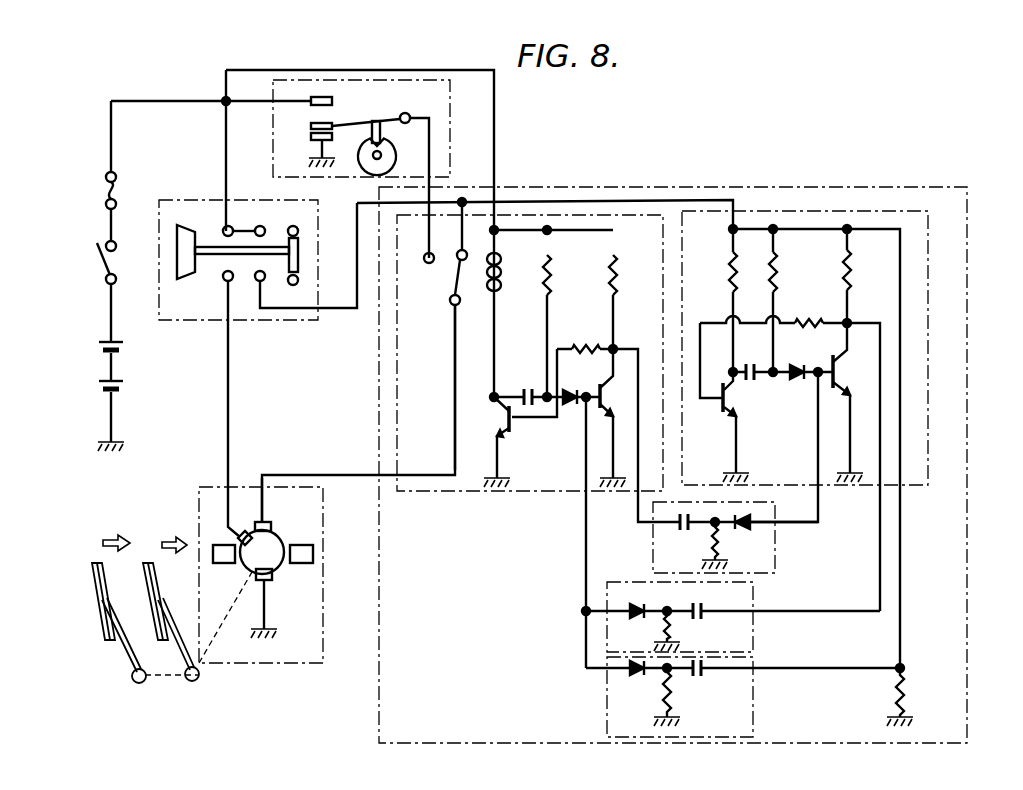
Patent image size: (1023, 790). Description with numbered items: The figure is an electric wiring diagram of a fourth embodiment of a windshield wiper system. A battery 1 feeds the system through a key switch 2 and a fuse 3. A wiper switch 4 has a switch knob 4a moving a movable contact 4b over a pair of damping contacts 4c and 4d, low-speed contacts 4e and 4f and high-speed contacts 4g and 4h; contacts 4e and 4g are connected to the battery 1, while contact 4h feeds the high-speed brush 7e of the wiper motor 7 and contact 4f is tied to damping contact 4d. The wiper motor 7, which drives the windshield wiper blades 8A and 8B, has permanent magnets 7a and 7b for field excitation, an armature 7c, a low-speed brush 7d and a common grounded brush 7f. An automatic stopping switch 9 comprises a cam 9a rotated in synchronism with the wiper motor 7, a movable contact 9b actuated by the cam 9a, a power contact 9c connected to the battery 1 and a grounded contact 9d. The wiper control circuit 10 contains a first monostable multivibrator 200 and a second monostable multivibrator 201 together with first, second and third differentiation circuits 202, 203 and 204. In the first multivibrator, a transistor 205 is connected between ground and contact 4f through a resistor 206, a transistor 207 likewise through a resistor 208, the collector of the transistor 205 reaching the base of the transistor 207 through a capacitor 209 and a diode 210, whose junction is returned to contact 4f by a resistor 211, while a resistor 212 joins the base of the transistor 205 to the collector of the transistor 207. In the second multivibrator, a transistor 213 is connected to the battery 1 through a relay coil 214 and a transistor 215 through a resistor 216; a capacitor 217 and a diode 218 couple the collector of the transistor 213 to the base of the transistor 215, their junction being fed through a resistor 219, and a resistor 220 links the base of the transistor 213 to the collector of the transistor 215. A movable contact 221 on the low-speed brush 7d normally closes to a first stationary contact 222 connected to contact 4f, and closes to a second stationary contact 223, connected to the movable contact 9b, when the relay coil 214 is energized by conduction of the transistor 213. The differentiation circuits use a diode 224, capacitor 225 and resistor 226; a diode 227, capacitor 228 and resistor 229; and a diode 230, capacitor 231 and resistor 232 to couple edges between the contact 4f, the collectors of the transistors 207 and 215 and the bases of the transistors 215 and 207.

The battery 1 is at (123, 366).
The key switch 2 is at (98, 271).
The fuse 3 is at (98, 195).
The wiper switch 4 is at (171, 200).
The switch knob 4a is at (183, 284).
The movable contact 4b is at (300, 256).
The damping contact 4c is at (298, 229).
The damping contact 4d is at (298, 283).
The low-speed contact 4e is at (262, 229).
The low-speed contact 4f is at (260, 283).
The high-speed contact 4g is at (223, 230).
The high-speed contact 4h is at (226, 282).
The wiper motor 7 is at (306, 663).
The permanent magnet 7a is at (224, 564).
The permanent magnet 7b is at (315, 548).
The armature 7c is at (258, 531).
The low-speed brush 7d is at (271, 527).
The high-speed brush 7e is at (237, 538).
The common grounded brush 7f is at (272, 579).
The windshield wiper blade 8A is at (154, 583).
The windshield wiper blade 8B is at (95, 585).
The automatic stopping switch 9 is at (452, 97).
The cam 9a is at (410, 158).
The movable contact 9b is at (311, 126).
The power contact 9c is at (332, 101).
The grounded contact 9d is at (311, 139).
The wiper control circuit 10 is at (929, 187).
The first monostable multivibrator 200 is at (928, 355).
The second monostable multivibrator 201 is at (493, 493).
The first differentiation circuit 202 is at (753, 717).
The second differentiation circuit 203 is at (753, 635).
The third differentiation circuit 204 is at (775, 561).
The transistor 205 is at (726, 420).
The resistor 206 is at (730, 278).
The transistor 207 is at (848, 376).
The resistor 208 is at (852, 278).
The capacitor 209 is at (758, 382).
The diode 210 is at (794, 368).
The resistor 211 is at (780, 269).
The resistor 212 is at (808, 317).
The transistor 213 is at (496, 416).
The relay coil 214 is at (502, 288).
The transistor 215 is at (608, 398).
The resistor 216 is at (616, 284).
The capacitor 217 is at (530, 388).
The diode 218 is at (572, 406).
The resistor 219 is at (552, 271).
The resistor 220 is at (586, 345).
The movable contact 221 is at (452, 304).
The first stationary contact 222 is at (465, 262).
The second stationary contact 223 is at (428, 265).
The diode 224 is at (637, 674).
The capacitor 225 is at (702, 672).
The resistor 226 is at (672, 688).
The diode 227 is at (623, 616).
The capacitor 228 is at (704, 606).
The resistor 229 is at (674, 625).
The diode 230 is at (750, 524).
The capacitor 231 is at (684, 533).
The resistor 232 is at (724, 542).